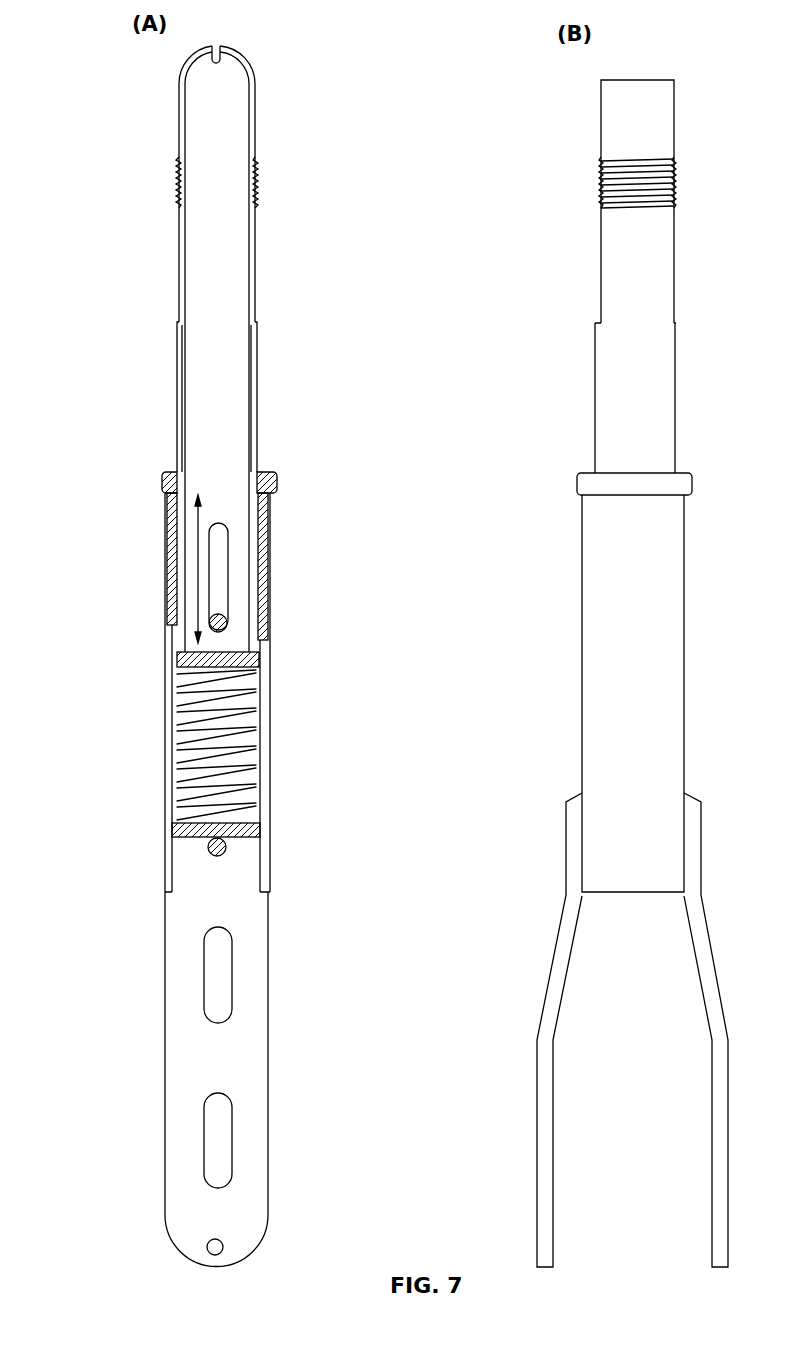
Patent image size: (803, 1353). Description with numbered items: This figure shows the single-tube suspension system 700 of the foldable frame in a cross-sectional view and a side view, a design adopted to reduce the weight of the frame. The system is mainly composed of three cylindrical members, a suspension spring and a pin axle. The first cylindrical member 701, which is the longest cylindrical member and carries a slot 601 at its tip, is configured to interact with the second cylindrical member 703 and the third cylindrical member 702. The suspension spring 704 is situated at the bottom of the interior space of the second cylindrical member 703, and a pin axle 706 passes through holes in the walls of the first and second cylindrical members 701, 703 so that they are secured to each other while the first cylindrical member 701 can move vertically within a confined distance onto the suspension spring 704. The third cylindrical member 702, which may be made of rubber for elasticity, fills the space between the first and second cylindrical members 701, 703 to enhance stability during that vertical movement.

The single-tube suspension system 700 is at (123, 120).
The slot at tip of tube 601 is at (220, 63).
The first cylindrical member 701 is at (607, 116).
The third cylindrical member 702 is at (593, 477).
The second cylindrical member 703 is at (595, 650).
The suspension spring 704 is at (203, 757).
The pin axle 706 is at (222, 618).